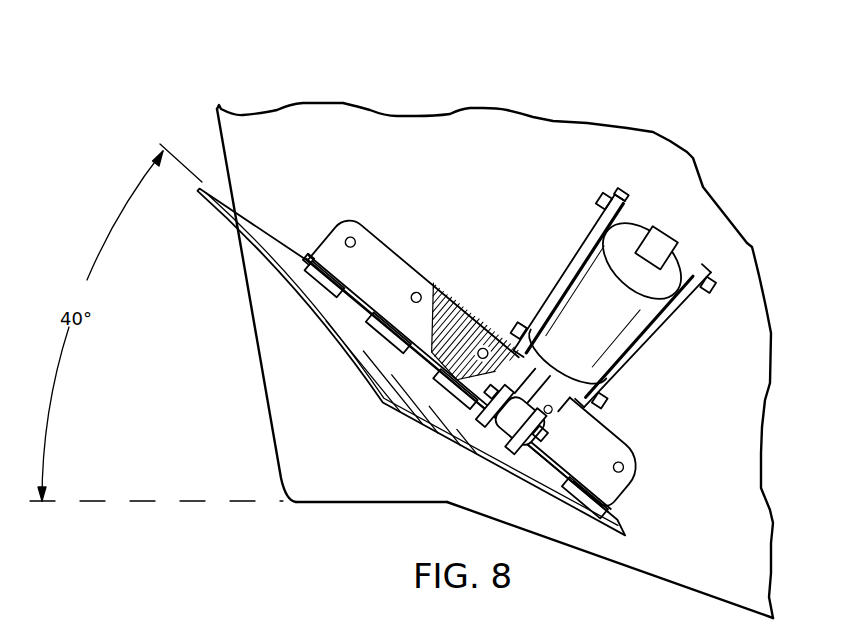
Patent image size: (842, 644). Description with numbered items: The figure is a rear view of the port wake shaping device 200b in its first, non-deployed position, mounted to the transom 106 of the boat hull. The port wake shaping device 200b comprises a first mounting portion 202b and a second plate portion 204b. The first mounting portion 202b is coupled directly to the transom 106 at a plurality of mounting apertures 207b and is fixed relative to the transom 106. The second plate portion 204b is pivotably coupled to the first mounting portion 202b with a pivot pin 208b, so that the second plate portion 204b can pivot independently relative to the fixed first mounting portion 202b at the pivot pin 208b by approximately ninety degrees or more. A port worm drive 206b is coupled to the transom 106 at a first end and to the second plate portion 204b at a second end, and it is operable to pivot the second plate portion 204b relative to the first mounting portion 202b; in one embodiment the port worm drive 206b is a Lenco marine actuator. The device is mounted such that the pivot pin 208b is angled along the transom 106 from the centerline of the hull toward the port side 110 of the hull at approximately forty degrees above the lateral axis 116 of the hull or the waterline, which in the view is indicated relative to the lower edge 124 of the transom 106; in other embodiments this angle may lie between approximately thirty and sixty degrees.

The port wake shaping device 200b is at (270, 88).
The port side 110 is at (216, 127).
The lateral axis 116 is at (178, 503).
The lower edge 124 is at (372, 504).
The transom 106 is at (683, 573).
The second plate portion 204b is at (255, 233).
The first mounting portion 202b is at (373, 246).
The mounting apertures 207b is at (416, 293).
The pivot pin 208b is at (305, 256).
The port worm drive 206b is at (581, 293).